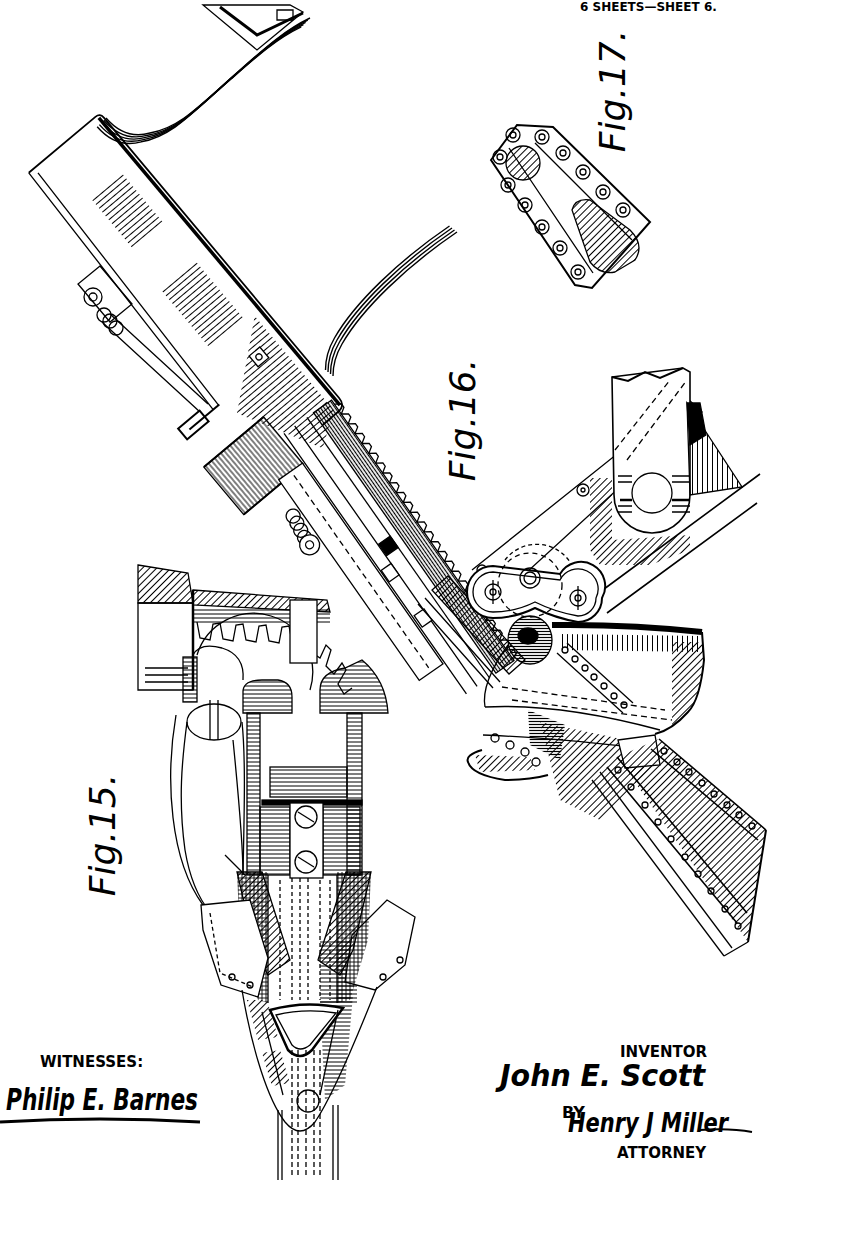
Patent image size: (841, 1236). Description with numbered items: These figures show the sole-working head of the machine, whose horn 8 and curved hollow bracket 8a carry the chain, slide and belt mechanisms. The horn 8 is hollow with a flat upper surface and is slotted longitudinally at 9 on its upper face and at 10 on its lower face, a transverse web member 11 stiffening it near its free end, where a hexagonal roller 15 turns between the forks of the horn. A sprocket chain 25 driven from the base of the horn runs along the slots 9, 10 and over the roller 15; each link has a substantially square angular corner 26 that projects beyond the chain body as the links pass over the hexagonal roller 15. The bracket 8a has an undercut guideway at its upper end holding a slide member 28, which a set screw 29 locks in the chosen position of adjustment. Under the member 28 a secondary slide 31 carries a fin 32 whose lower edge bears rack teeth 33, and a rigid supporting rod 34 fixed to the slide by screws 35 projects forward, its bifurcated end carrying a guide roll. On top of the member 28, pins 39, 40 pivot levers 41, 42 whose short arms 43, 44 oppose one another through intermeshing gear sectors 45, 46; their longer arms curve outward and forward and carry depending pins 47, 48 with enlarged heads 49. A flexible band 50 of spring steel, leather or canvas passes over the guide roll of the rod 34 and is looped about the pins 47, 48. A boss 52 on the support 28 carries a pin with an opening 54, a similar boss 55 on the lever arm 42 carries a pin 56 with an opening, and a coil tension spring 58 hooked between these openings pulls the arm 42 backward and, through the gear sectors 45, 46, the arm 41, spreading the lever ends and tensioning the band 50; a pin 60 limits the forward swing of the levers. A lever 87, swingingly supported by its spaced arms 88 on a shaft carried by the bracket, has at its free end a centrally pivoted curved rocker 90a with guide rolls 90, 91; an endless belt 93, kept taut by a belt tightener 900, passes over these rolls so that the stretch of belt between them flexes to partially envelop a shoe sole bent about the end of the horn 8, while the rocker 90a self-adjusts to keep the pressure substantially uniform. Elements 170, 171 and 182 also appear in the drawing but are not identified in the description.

In FIG. 16, the horn 8 is at (738, 920).
In FIG. 16, the bracket 8a is at (277, 197).
In FIG. 16, the slot 9 is at (718, 900).
In FIG. 15, the slot 9 is at (292, 1143).
In FIG. 16, the slot 10 is at (737, 812).
In FIG. 17, the slot 10 is at (580, 222).
In FIG. 15, the slot 10 is at (338, 1125).
In FIG. 16, the web member 11 is at (712, 796).
In FIG. 17, the web member 11 is at (612, 248).
In FIG. 17, the hexagonal roller 15 is at (508, 158).
In FIG. 16, the sprocket chain 25 is at (697, 884).
In FIG. 17, the sprocket chain 25 is at (560, 258).
In FIG. 15, the sprocket chain 25 is at (315, 1158).
In FIG. 17, the angular corner 26 is at (515, 122).
In FIG. 16, the slide member 28 is at (46, 186).
In FIG. 15, the slide member 28 is at (192, 568).
In FIG. 16, the set screw 29 is at (256, 350).
In FIG. 16, the secondary slide 31 is at (348, 462).
In FIG. 15, the secondary slide 31 is at (240, 816).
In FIG. 16, the fin 32 is at (372, 462).
In FIG. 16, the rack teeth 33 is at (395, 478).
In FIG. 16, the supporting rod 34 is at (492, 690).
In FIG. 15, the supporting rod 34 is at (317, 768).
In FIG. 16, the screws 35 is at (396, 576).
In FIG. 15, the screws 35 is at (326, 856).
In FIG. 15, the pin 39 is at (186, 726).
In FIG. 16, the pin 40 is at (225, 468).
In FIG. 15, the lever 41 is at (176, 810).
In FIG. 16, the lever 42 is at (337, 582).
In FIG. 15, the lever 42 is at (395, 898).
In FIG. 15, the short arm 43 is at (205, 662).
In FIG. 16, the short arm 44 is at (186, 428).
In FIG. 15, the gear sector 45 is at (217, 622).
In FIG. 16, the gear sector 46 is at (176, 390).
In FIG. 15, the gear sector 46 is at (339, 656).
In FIG. 15, the pin 47 is at (250, 878).
In FIG. 16, the pin 48 is at (445, 645).
In FIG. 15, the pin 48 is at (412, 920).
In FIG. 16, the enlarged heads 49 is at (478, 567).
In FIG. 15, the enlarged heads 49 is at (225, 855).
In FIG. 16, the band 50 is at (470, 652).
In FIG. 15, the band 50 is at (250, 957).
In FIG. 16, the boss 52 is at (86, 282).
In FIG. 16, the opening 54 is at (84, 298).
In FIG. 16, the boss 55 is at (306, 535).
In FIG. 16, the pin 56 is at (321, 548).
In FIG. 16, the coil tension spring 58 is at (106, 328).
In FIG. 16, the pin 60 is at (232, 420).
In FIG. 16, the lever 87 is at (585, 503).
In FIG. 16, the arm 88 is at (712, 465).
In FIG. 16, the guide roll 90 is at (496, 565).
In FIG. 16, the rocker 90a is at (506, 565).
In FIG. 16, the guide roll 91 is at (603, 600).
In FIG. 16, the endless belt 93 is at (541, 500).
In FIG. 16, the block edge 170 is at (611, 377).
In FIG. 16, the bore 171 is at (664, 508).
In FIG. 16, the butt plate 182 is at (224, 20).
In FIG. 16, the belt tightener 900 is at (582, 483).